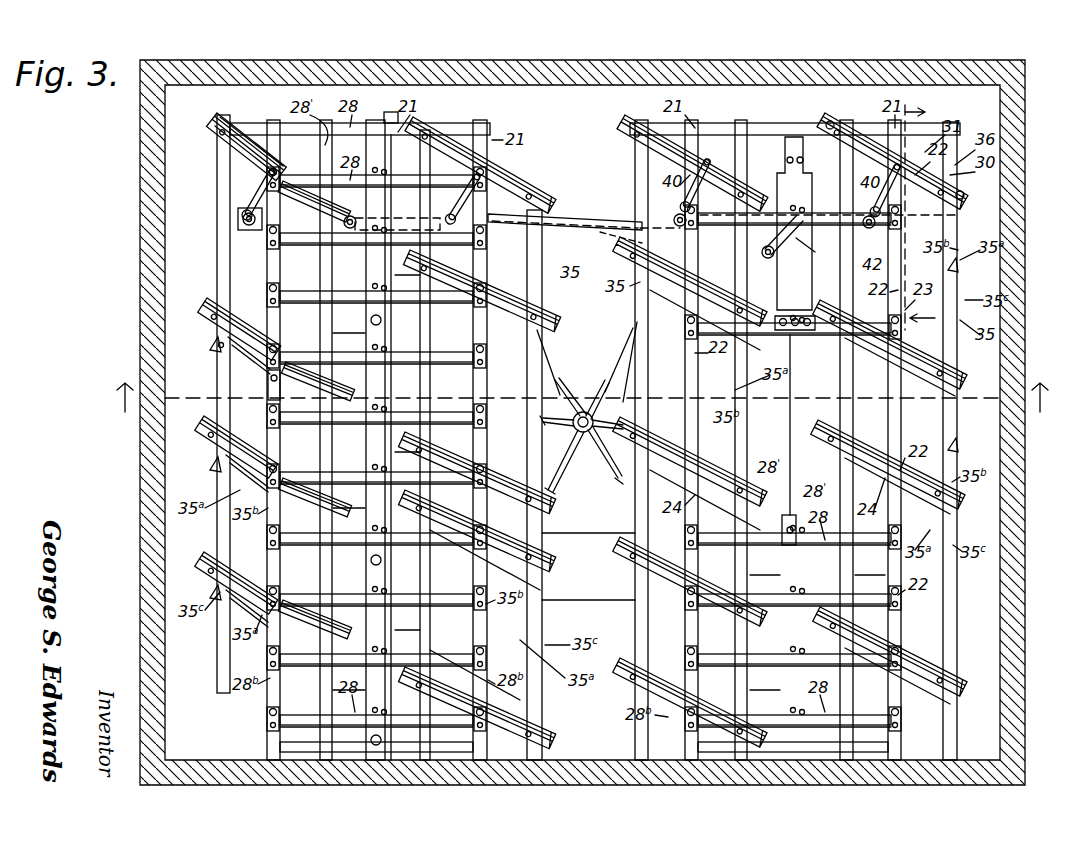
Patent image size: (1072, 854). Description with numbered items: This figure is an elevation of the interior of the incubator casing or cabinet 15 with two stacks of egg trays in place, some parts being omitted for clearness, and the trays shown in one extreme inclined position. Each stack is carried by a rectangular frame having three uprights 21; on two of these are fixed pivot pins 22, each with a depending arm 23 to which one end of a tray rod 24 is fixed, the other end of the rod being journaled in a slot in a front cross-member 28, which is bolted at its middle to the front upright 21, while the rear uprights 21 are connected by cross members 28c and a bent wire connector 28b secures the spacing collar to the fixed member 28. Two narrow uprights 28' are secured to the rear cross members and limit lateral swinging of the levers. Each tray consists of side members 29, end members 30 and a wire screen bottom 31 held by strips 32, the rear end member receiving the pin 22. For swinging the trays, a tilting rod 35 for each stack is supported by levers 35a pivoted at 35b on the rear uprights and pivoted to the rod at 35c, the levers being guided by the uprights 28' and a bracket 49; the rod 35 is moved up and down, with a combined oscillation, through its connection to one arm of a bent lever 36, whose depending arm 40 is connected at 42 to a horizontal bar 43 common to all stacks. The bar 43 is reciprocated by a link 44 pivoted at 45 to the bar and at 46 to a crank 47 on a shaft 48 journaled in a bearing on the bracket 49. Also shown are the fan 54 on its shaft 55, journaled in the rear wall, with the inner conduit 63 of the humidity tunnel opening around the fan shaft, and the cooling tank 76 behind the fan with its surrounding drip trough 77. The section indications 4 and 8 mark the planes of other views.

The section line 4- 4 is at (577, 397).
The section line 8- 8 is at (920, 213).
The casing or cabinet 15 is at (165, 207).
The upright 21 is at (270, 127).
The pivot pin 22 is at (700, 170).
The depending arm 23 is at (688, 326).
The tray rod 24 is at (690, 295).
The cross-member 28 is at (376, 467).
The narrow upright 28' is at (376, 403).
The bent wire connector 28b is at (268, 536).
The cross member 28c is at (795, 345).
The side member 29 is at (828, 120).
The end member 30 is at (240, 120).
The wire screen bottom 31 is at (238, 140).
The strip 32 is at (243, 150).
The tilting rod 35 is at (265, 250).
The lever 35a is at (265, 257).
The pivot 35b is at (265, 272).
The pivot 35c is at (222, 470).
The bent lever 36 is at (660, 122).
The depending arm 40 is at (264, 180).
The connection 42 is at (241, 216).
The horizontal bar 43 is at (597, 215).
The link 44 is at (597, 238).
The pivot 45 is at (352, 232).
The pivot 46 is at (768, 258).
The crank 47 is at (808, 246).
The shaft 48 is at (808, 210).
The bracket 49 is at (782, 175).
The fan 54 is at (598, 378).
The fan shaft 55 is at (583, 445).
The inner conduit 63 is at (548, 437).
The tank 76 is at (562, 535).
The drip trough 77 is at (588, 615).